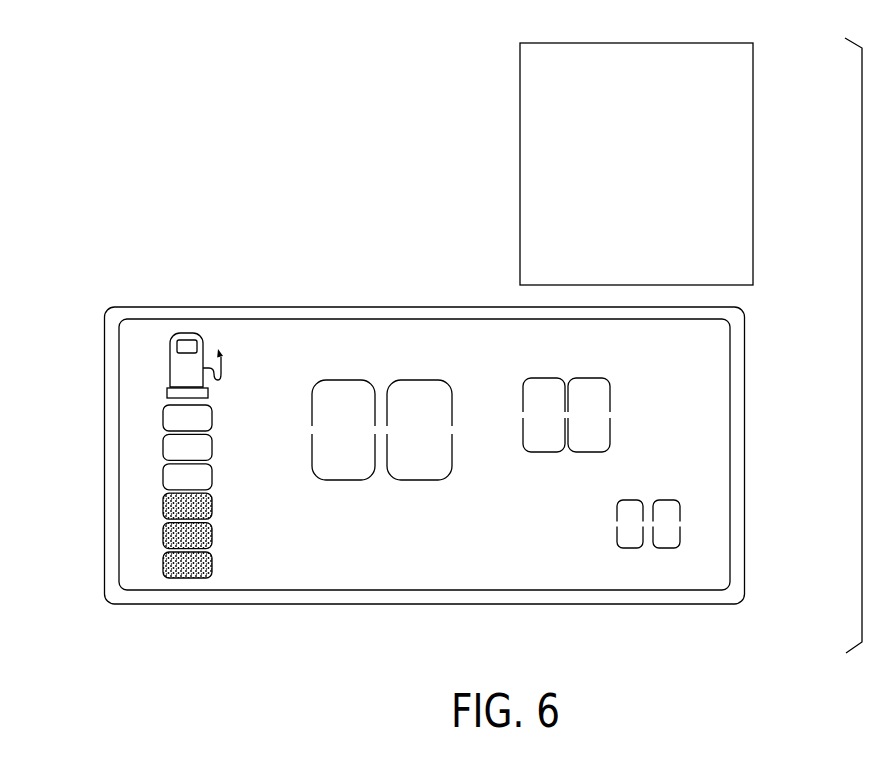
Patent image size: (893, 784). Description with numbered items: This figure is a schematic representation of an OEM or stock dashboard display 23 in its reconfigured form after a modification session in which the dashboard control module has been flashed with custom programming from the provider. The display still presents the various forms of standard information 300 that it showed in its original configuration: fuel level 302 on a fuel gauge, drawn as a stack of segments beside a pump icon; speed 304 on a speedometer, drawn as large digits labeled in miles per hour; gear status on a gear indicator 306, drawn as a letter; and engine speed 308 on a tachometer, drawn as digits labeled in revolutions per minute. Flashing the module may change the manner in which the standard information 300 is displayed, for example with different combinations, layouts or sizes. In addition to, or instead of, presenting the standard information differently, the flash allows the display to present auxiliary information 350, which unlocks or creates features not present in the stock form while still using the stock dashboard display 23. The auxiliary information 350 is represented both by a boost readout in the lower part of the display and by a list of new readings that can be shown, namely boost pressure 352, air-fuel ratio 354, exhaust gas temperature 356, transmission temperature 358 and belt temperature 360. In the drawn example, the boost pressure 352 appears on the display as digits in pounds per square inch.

The dashboard display 23 is at (126, 623).
The standard information 300 is at (352, 403).
The fuel level 302 is at (158, 417).
The speed 304 is at (312, 470).
The gear indicator 306 is at (580, 358).
The engine speed 308 is at (523, 400).
The auxiliary information 350 is at (500, 113).
The boost pressure 352 is at (682, 83).
The air-fuel ratio 354 is at (682, 125).
The exhaust gas temperature 356 is at (682, 163).
The transmission temperature 358 is at (715, 202).
The belt temperature 360 is at (717, 243).